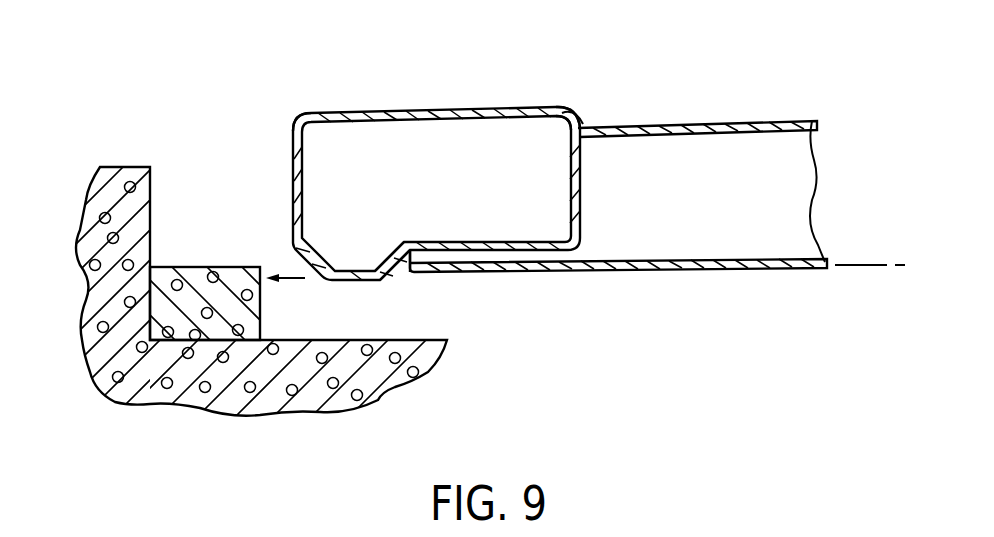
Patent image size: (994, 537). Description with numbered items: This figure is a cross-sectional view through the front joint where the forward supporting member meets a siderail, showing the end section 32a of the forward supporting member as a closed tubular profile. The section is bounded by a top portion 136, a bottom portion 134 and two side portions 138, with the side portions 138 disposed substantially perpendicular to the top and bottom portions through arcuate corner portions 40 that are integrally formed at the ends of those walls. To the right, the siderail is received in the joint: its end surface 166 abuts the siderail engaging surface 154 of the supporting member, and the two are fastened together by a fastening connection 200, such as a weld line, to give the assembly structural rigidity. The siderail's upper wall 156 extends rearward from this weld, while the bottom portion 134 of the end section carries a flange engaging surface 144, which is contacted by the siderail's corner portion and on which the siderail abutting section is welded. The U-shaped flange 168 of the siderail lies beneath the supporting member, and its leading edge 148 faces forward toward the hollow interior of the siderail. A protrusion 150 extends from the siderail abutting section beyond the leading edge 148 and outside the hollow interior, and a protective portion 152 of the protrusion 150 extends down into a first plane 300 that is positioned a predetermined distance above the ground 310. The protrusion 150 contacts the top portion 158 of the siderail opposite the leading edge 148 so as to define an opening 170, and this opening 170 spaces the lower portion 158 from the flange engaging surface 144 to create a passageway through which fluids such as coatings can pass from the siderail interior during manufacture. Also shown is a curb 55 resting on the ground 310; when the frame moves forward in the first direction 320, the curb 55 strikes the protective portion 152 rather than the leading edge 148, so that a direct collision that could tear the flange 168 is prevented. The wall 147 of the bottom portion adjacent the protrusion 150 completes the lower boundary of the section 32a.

The left end section 32a is at (497, 98).
The top portion 136 is at (395, 111).
The side portion 138 is at (292, 183).
The arcuate corner portion 40 is at (302, 119).
The end surface 166 is at (548, 109).
The fastening connection 200 is at (582, 122).
The upper flange 156 is at (755, 127).
The siderail engaging surface 154 is at (580, 170).
The protrusion 150 is at (409, 246).
The bottom wall 147 is at (489, 262).
The bottom portion 134 is at (527, 250).
The protective portion 152 is at (342, 272).
The opening 170 is at (397, 277).
The leading edge 148 is at (412, 278).
The flange engaging surface 144 is at (605, 312).
The flange 168 is at (497, 270).
The top portion of the siderail 158 is at (714, 272).
The curb 55 is at (195, 267).
The ground 310 is at (397, 388).
The first direction 320 is at (290, 276).
The first plane 300 is at (864, 263).